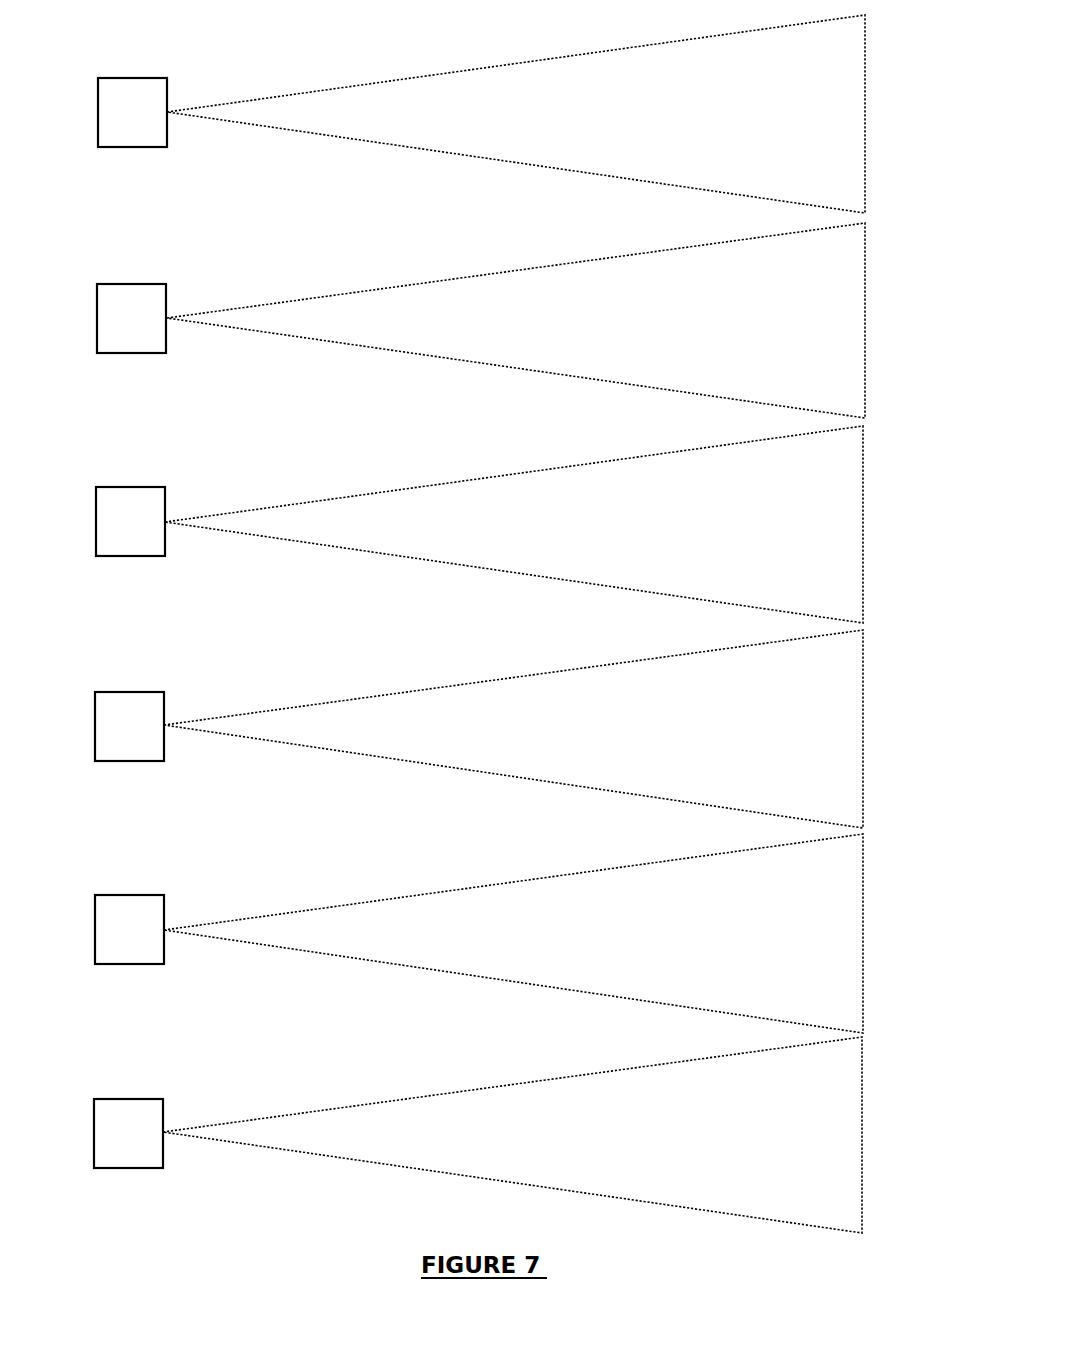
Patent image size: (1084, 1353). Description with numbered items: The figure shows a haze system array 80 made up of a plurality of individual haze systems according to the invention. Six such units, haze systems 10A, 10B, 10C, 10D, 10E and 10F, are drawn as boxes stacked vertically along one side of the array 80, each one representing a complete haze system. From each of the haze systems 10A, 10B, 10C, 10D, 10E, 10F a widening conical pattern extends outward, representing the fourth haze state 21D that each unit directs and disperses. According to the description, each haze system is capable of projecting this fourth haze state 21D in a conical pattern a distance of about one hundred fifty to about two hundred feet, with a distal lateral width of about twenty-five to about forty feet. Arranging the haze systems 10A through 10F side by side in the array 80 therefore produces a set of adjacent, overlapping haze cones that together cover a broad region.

The haze system 10A is at (132, 112).
The haze system 10B is at (131, 318).
The haze system 10C is at (130, 521).
The haze system 10D is at (129, 726).
The haze system 10E is at (129, 929).
The haze system 10F is at (128, 1133).
The fourth haze state 21D is at (514, 624).
The haze system array 80 is at (479, 647).